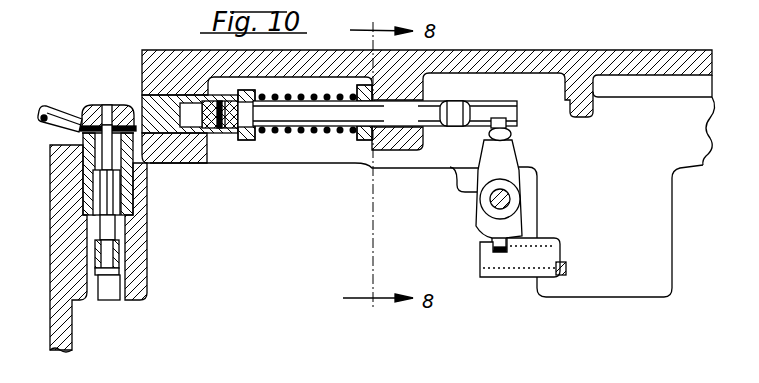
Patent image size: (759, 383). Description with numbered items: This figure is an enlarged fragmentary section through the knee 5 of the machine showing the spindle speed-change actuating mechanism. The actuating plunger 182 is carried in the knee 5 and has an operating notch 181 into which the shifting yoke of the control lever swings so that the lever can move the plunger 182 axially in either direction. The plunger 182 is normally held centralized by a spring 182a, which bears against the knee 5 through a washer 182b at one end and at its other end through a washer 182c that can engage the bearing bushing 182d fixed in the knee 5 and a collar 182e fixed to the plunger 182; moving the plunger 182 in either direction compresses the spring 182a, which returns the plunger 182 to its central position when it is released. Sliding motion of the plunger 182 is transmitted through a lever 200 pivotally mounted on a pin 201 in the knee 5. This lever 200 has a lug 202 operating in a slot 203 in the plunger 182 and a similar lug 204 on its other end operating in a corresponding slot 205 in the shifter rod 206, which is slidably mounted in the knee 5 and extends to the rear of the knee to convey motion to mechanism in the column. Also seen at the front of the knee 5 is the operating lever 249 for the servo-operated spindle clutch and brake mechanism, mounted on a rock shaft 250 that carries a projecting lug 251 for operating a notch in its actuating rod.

The knee 5 is at (57, 237).
The operating notch 181 is at (457, 115).
The actuating plunger 182 is at (385, 113).
The spring 182a is at (288, 133).
The washer 182b is at (359, 141).
The washer 182c is at (250, 140).
The bearing bushing 182d is at (222, 130).
The collar 182e is at (233, 130).
The lever 200 is at (507, 150).
The pin 201 is at (490, 200).
The lug 202 is at (514, 131).
The slot 203 is at (500, 116).
The lug 204 is at (491, 238).
The slot 205 is at (497, 257).
The shifter rod 206 is at (512, 262).
The operating lever 249 is at (68, 114).
The rock shaft 250 is at (102, 104).
The projecting lug 251 is at (107, 202).